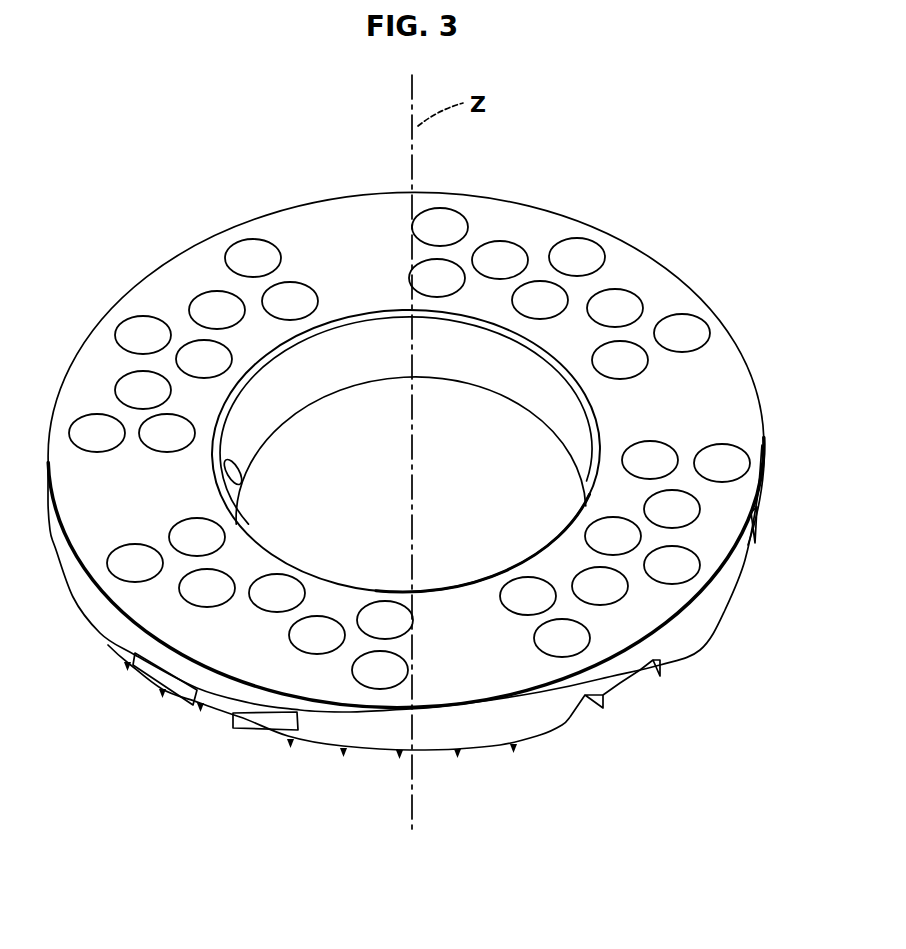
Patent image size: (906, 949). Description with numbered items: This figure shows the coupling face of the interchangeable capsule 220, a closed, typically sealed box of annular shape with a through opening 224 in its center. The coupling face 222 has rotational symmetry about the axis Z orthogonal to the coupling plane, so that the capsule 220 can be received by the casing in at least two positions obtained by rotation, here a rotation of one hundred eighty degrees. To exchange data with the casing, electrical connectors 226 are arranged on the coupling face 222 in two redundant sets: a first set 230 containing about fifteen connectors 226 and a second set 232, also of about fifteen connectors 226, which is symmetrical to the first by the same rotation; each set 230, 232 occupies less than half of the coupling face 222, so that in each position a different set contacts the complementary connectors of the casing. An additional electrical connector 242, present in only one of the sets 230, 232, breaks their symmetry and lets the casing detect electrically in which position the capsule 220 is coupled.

The capsule 220 is at (722, 229).
The coupling face 222 is at (713, 401).
The through opening 224 is at (477, 486).
The electrical connectors 226 is at (253, 260).
The first set of connectors 230 is at (58, 568).
The second set of connectors 232 is at (275, 206).
The additional electrical connector 242 is at (583, 262).